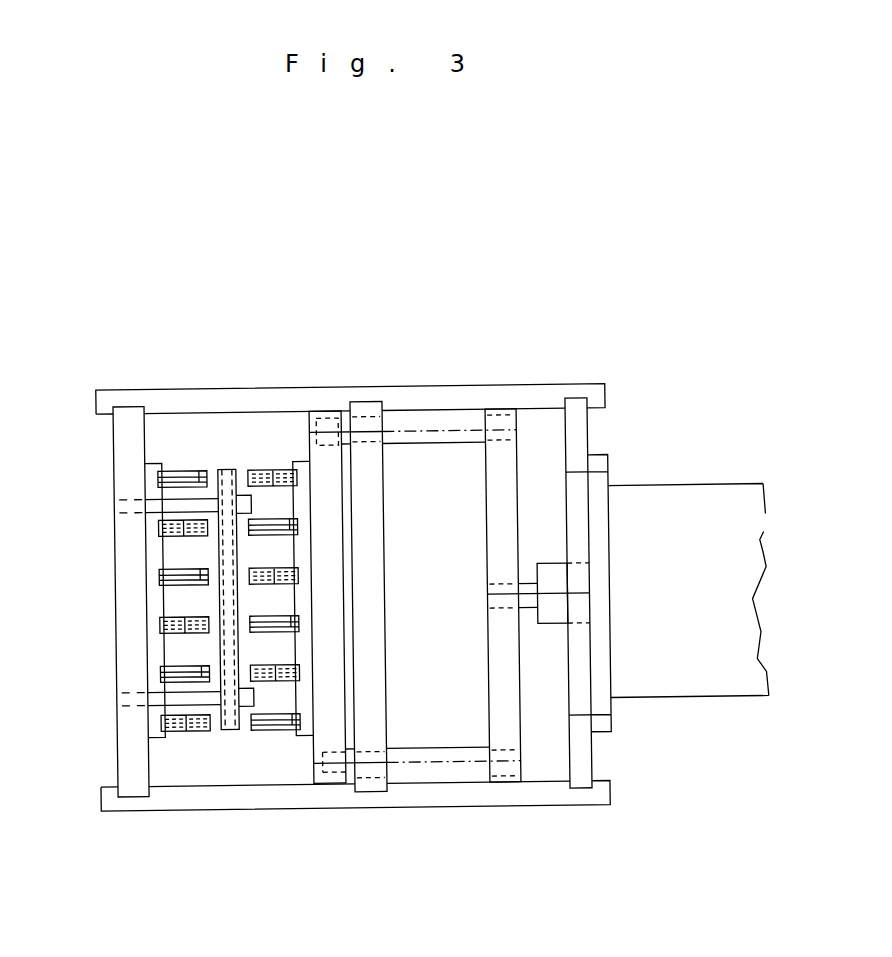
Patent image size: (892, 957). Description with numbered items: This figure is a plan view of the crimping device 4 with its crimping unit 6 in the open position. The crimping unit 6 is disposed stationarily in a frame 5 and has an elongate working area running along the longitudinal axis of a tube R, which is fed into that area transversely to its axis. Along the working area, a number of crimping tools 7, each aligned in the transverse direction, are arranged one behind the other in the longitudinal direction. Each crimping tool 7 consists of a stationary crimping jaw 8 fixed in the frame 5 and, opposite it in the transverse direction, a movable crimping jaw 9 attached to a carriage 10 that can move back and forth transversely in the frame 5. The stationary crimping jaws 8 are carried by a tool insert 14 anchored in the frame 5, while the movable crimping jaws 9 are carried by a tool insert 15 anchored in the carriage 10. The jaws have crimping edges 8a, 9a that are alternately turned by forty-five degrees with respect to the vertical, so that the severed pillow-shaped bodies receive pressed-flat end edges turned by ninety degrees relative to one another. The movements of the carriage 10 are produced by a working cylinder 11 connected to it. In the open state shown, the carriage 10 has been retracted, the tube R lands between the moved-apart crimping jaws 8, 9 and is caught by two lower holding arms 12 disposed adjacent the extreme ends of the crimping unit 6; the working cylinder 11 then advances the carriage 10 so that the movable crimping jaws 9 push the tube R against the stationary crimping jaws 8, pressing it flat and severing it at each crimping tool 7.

The crimping device 4 is at (439, 339).
The frame 5 is at (532, 390).
The crimping unit 6 is at (148, 566).
The crimping tool 7 is at (261, 749).
The stationary crimping jaw 8 is at (168, 528).
The crimping edge 8a is at (173, 475).
The movable crimping jaw 9 is at (274, 478).
The crimping edge 9a is at (297, 526).
The carriage 10 is at (327, 483).
The working cylinder 11 is at (553, 578).
The lower holding arm 12 is at (185, 698).
The tool insert 14 is at (152, 603).
The tool insert 15 is at (312, 597).
The tube R is at (227, 470).